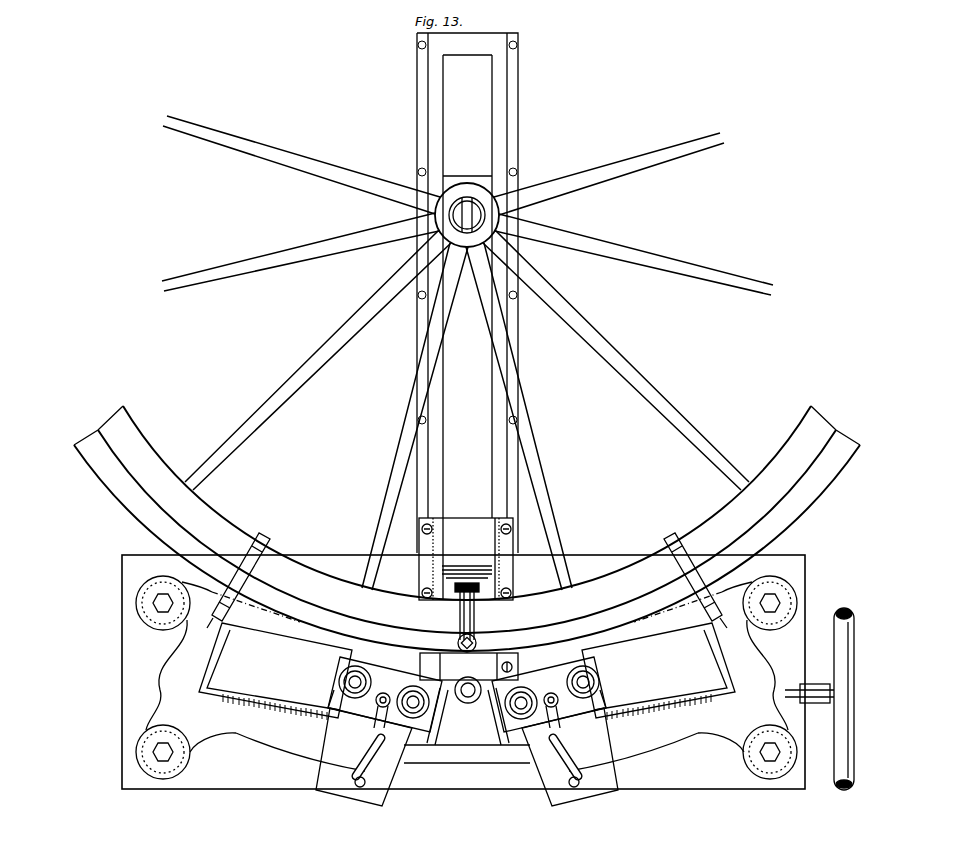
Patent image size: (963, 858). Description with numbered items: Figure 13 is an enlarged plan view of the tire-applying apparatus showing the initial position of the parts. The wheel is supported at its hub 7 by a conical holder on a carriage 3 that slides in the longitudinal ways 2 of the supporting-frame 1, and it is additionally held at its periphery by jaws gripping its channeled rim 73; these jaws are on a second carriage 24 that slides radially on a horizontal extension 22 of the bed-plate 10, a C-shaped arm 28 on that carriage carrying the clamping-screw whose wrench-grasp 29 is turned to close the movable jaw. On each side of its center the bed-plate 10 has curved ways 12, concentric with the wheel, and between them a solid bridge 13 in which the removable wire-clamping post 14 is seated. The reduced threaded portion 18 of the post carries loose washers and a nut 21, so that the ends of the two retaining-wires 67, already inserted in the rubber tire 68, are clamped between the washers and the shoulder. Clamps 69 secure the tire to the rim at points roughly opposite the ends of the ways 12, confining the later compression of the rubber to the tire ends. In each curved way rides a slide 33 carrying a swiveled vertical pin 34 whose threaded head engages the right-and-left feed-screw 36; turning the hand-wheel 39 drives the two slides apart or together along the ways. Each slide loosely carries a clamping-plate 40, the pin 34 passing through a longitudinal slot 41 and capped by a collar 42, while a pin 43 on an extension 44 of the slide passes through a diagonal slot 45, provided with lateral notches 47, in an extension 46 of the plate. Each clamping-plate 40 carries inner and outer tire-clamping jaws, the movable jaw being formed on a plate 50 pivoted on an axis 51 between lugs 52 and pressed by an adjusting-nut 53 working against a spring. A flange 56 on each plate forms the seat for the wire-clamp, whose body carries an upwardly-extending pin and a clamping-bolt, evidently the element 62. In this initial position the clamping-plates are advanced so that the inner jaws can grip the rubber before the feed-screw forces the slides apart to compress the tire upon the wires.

The supporting-frame 1 is at (808, 570).
The longitudinal ways 2 is at (514, 148).
The carriage 3 is at (462, 182).
The hub 7 is at (493, 214).
The bed-plate 10 is at (722, 734).
The curved ways 12 is at (254, 712).
The bridge 13 is at (467, 726).
The wire-clamping post 14 is at (475, 678).
The reduced threaded portion 18 is at (470, 711).
The nut 21 is at (463, 681).
The horizontal extension 22 is at (486, 520).
The carriage 24 is at (482, 566).
The C-shaped arm 28 is at (478, 634).
The wrench-grasp 29 is at (458, 642).
The slide 33 is at (440, 748).
The vertical pin 34 is at (467, 716).
The feed-screw 36 is at (659, 698).
The hand-wheel 39 is at (844, 606).
The clamping-plate 40 is at (467, 702).
The longitudinal slot 41 is at (556, 694).
The collar 42 is at (495, 710).
The pin 43 is at (618, 800).
The extension of the slide 44 is at (380, 806).
The diagonal slot 45 is at (467, 757).
The extension of the clamping-plate 46 is at (320, 770).
The lateral notches 47 is at (380, 788).
The plate 50 is at (469, 673).
The axis 51 is at (391, 702).
The lugs 52 is at (340, 678).
The adjusting-nut 53 is at (342, 666).
The flange 56 is at (468, 726).
The spring 62 is at (486, 717).
The wires 67 is at (469, 666).
The rubber tire 68 is at (820, 492).
The clamps 69 is at (268, 556).
The channeled rim 73 is at (302, 614).